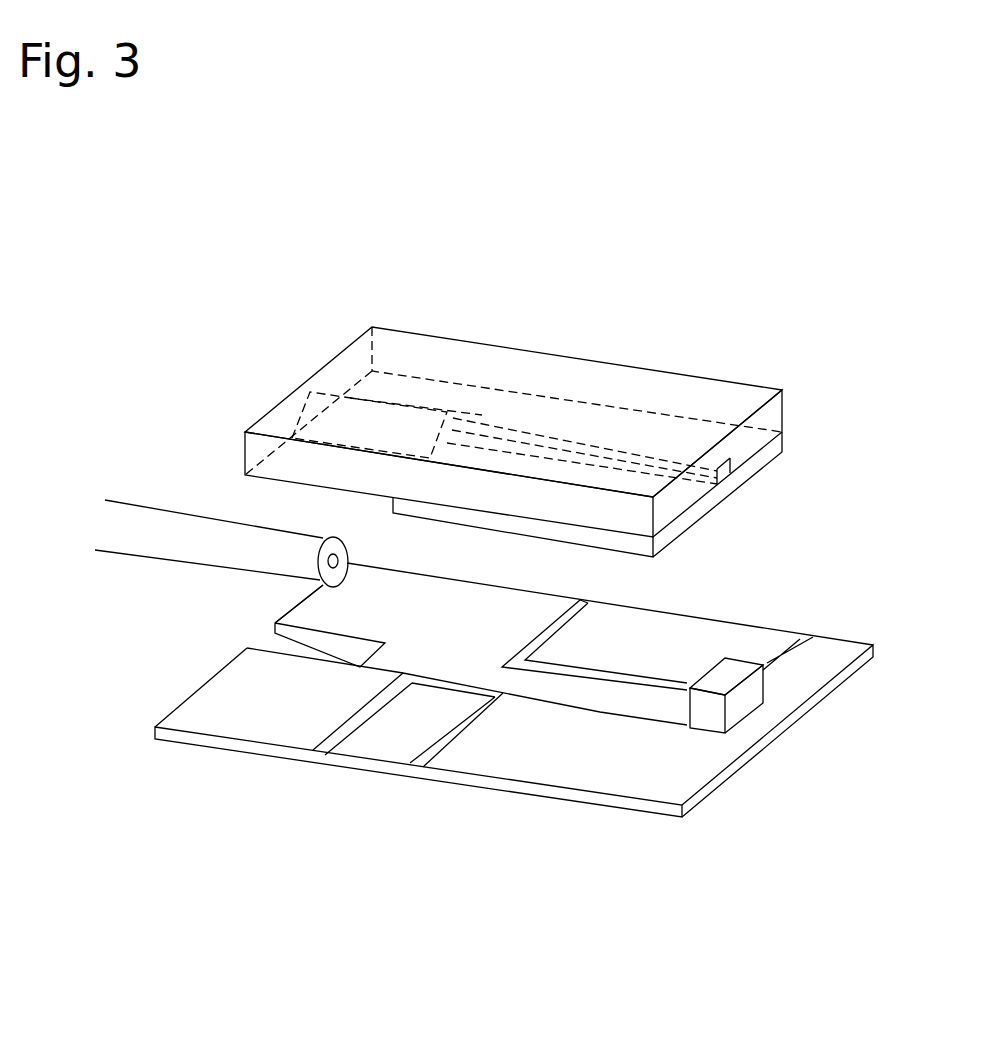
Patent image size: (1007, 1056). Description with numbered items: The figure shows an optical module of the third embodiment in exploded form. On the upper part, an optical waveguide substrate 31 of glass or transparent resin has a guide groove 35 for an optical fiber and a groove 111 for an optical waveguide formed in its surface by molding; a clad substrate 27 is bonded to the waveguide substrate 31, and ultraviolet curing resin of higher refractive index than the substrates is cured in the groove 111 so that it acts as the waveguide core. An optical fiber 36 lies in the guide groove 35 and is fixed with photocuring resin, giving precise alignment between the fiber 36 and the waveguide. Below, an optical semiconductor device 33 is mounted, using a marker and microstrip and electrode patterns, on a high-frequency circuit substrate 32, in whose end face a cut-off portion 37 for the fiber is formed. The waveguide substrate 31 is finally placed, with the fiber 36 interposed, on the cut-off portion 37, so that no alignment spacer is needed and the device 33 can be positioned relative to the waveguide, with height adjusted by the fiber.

The optical waveguide substrate 31 is at (682, 383).
The guide groove for optical fiber 35 is at (403, 403).
The clad substrate 27 is at (762, 460).
The groove for optical waveguide 111 is at (728, 477).
The optical fiber 36 is at (158, 527).
The cut-off portion for optical fiber 37 is at (317, 650).
The high-frequency circuit substrate 32 is at (575, 767).
The optical semiconductor device 33 is at (730, 673).